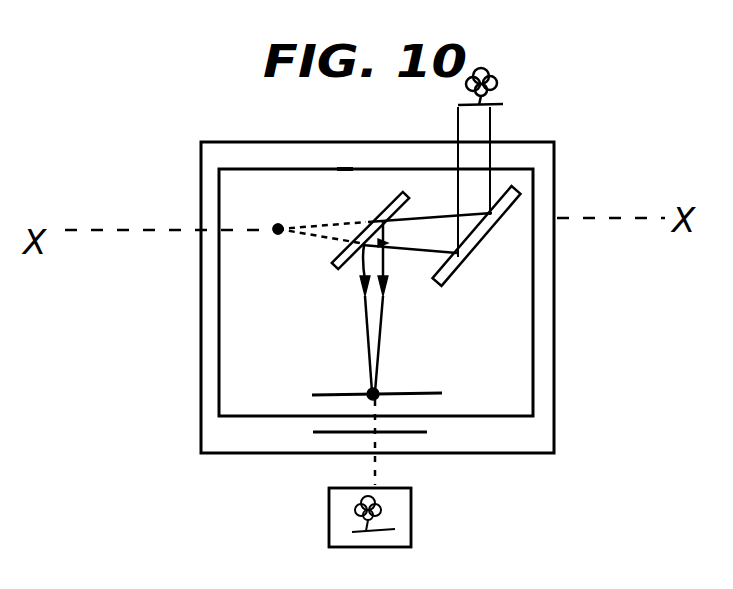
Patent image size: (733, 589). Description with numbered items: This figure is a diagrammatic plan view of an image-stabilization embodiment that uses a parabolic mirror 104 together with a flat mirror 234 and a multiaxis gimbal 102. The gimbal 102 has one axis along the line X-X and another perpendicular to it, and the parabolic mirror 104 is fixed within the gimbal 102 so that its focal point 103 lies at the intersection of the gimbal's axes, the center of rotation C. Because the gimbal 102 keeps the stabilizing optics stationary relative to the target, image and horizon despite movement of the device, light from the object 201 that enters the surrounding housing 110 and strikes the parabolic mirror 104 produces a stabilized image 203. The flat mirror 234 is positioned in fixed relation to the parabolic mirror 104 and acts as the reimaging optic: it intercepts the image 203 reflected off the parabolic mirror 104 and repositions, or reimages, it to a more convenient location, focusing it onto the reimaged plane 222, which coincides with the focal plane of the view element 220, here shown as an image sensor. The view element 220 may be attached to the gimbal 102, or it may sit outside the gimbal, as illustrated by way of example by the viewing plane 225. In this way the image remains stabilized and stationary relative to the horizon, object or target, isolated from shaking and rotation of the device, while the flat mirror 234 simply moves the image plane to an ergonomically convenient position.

The housing 110 is at (201, 170).
The multiaxis gimbal 102 is at (219, 240).
The focal point 103 is at (280, 227).
The center of rotation C is at (276, 233).
The flat mirror 234 is at (406, 199).
The parabolic mirror 104 is at (444, 279).
The object 201 is at (498, 76).
The focal plane of the view element 222 is at (407, 393).
The viewing plane 225 is at (413, 428).
The image 203 is at (411, 506).
The view element 220 is at (329, 527).